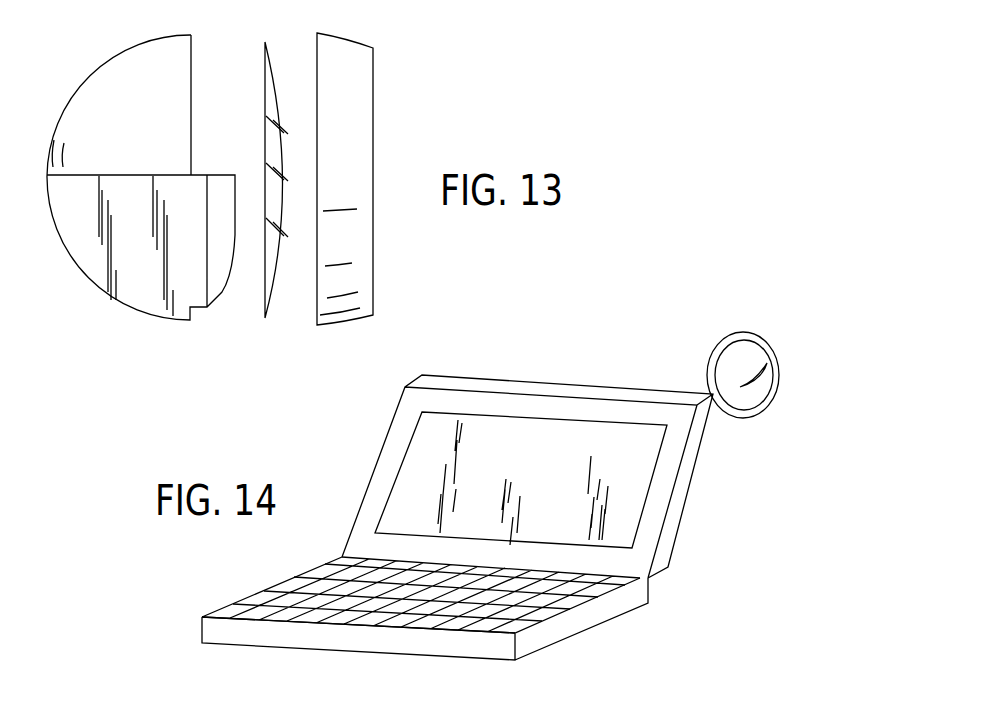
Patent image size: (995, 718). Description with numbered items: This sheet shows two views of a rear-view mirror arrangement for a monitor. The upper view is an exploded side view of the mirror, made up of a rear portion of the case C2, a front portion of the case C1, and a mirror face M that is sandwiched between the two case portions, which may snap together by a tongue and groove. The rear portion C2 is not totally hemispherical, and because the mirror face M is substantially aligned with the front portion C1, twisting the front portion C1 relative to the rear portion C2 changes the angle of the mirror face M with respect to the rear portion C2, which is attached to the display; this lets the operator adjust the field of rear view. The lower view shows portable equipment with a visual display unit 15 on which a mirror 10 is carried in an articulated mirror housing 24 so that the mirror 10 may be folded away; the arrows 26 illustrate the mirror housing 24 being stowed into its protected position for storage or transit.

In FIG. 13, the rear portion of the case C2 is at (118, 68).
In FIG. 13, the mirror face M is at (275, 88).
In FIG. 13, the front portion of the case C1 is at (368, 98).
In FIG. 14, the mirror 10 is at (757, 352).
In FIG. 14, the mirror housing 24 is at (778, 398).
In FIG. 14, the arrows 26 is at (673, 376).
In FIG. 14, the visual display unit 15 is at (633, 495).